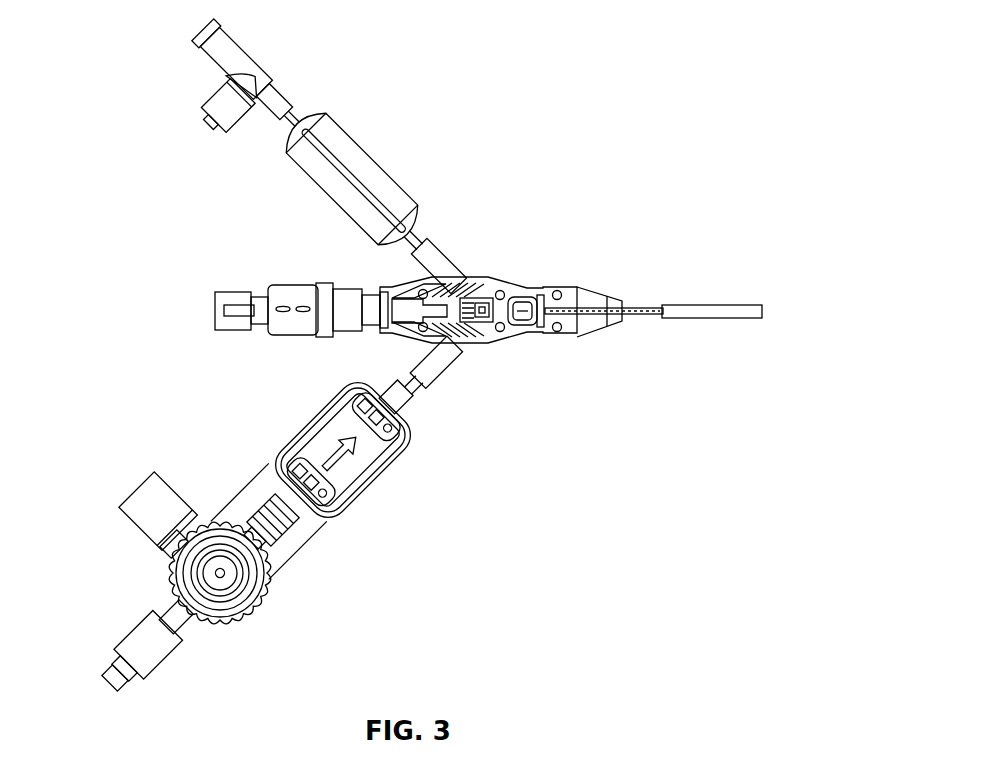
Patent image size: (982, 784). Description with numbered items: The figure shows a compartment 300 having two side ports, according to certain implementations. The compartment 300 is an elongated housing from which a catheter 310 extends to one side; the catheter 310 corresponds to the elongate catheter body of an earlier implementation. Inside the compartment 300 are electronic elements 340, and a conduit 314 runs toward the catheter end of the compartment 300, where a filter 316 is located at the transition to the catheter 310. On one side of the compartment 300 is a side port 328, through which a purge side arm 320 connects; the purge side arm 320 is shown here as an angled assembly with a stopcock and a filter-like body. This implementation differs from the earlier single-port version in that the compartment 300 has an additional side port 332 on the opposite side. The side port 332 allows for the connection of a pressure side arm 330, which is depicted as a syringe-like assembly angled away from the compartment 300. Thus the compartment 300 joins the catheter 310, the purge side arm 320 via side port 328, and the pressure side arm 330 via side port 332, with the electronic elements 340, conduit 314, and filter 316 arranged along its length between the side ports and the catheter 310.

The compartment 300 is at (516, 348).
The catheter 310 is at (749, 305).
The conduit 314 is at (579, 306).
The filter 316 is at (619, 298).
The purge side arm 320 is at (326, 548).
The side port 328 is at (462, 347).
The pressure side arm 330 is at (370, 142).
The side port 332 is at (470, 272).
The electronic elements 340 is at (504, 305).